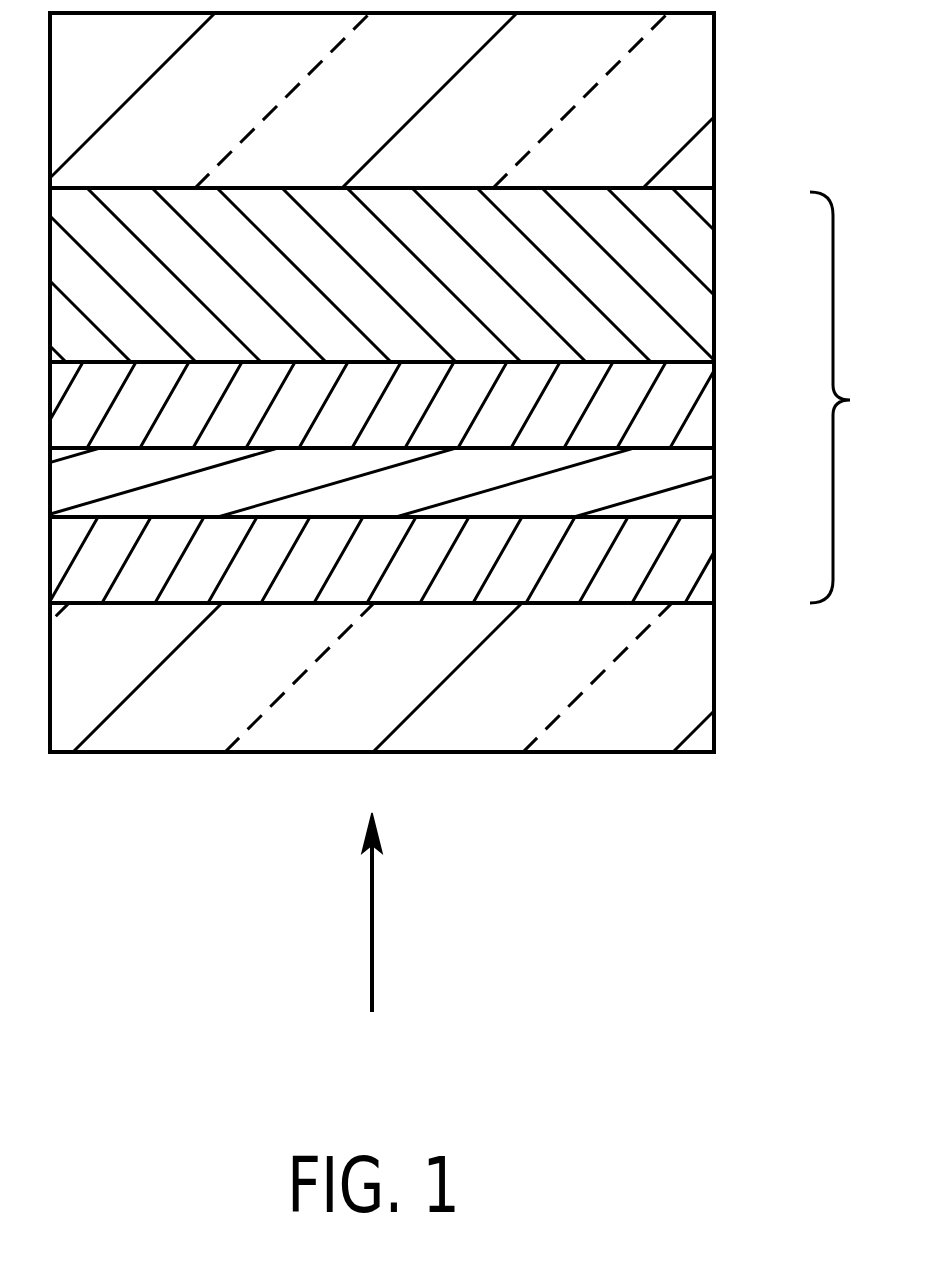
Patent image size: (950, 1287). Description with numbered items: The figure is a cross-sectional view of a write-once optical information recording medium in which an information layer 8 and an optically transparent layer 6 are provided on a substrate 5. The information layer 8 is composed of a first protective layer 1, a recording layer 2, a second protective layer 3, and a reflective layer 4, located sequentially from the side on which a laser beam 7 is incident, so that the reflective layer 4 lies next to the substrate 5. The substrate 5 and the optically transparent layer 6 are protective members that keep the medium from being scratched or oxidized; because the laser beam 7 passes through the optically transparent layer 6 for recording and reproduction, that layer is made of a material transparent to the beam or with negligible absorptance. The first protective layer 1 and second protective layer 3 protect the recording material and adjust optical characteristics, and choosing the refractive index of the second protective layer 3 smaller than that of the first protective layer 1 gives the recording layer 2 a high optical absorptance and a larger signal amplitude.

The first protective layer 1 is at (683, 568).
The recording layer 2 is at (683, 500).
The second protective layer 3 is at (680, 420).
The reflective layer 4 is at (685, 293).
The substrate 5 is at (685, 105).
The optically transparent layer 6 is at (683, 695).
The laser beam 7 is at (373, 933).
The information layer 8 is at (849, 397).